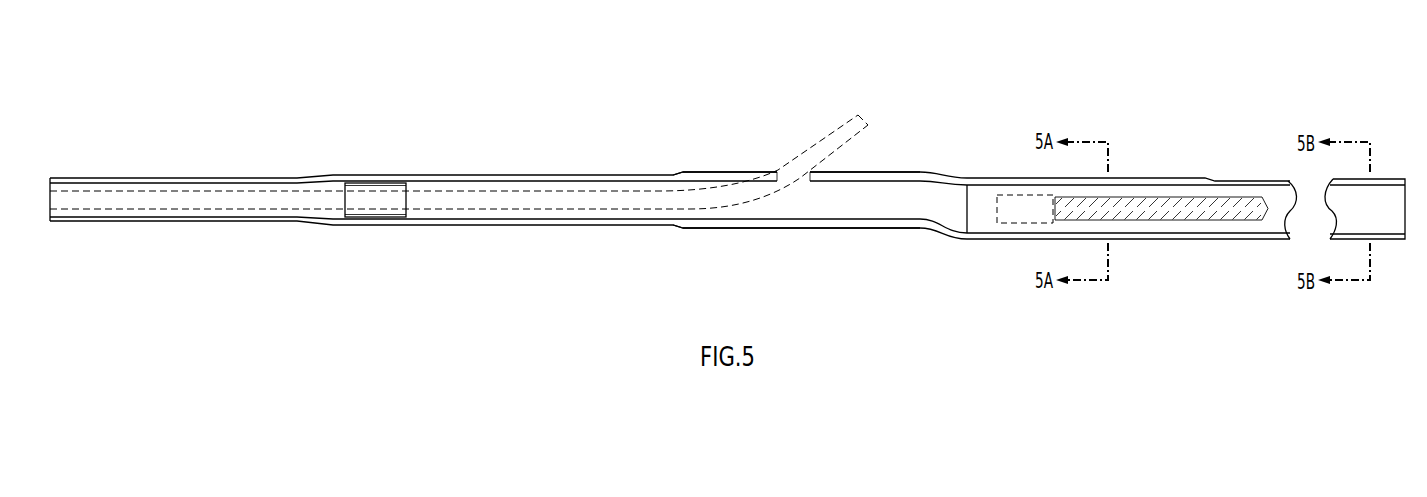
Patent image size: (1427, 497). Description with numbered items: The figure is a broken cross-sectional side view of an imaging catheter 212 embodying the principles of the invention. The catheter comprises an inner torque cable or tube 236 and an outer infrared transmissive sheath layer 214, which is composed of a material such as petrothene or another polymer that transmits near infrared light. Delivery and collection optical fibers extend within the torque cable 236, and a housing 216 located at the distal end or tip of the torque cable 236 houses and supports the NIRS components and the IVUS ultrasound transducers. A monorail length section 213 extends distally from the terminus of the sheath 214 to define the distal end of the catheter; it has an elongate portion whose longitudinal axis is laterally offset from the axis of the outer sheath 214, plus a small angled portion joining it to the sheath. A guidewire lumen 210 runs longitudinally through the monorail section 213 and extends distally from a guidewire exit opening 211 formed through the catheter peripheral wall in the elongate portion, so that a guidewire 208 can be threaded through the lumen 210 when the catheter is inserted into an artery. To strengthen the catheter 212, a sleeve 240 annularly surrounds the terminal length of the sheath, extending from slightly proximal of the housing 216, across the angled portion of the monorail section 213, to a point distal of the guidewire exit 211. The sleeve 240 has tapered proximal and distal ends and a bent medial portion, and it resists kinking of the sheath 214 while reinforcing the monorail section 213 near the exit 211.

The guidewire 208 is at (840, 139).
The guidewire lumen 210 is at (551, 213).
The guidewire exit opening 211 is at (742, 180).
The catheter 212 is at (1052, 80).
The monorail length section 213 is at (463, 179).
The outer infrared transmissive sheath layer 214 is at (858, 214).
The housing 216 is at (1008, 215).
The inner torque cable 236 is at (1247, 213).
The sleeve 240 is at (873, 174).